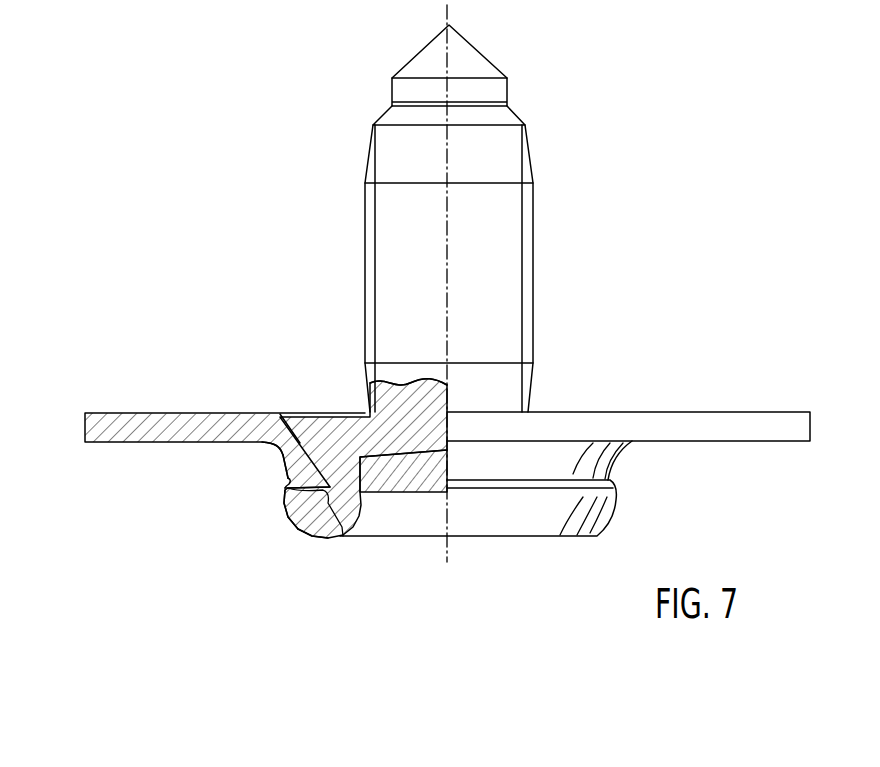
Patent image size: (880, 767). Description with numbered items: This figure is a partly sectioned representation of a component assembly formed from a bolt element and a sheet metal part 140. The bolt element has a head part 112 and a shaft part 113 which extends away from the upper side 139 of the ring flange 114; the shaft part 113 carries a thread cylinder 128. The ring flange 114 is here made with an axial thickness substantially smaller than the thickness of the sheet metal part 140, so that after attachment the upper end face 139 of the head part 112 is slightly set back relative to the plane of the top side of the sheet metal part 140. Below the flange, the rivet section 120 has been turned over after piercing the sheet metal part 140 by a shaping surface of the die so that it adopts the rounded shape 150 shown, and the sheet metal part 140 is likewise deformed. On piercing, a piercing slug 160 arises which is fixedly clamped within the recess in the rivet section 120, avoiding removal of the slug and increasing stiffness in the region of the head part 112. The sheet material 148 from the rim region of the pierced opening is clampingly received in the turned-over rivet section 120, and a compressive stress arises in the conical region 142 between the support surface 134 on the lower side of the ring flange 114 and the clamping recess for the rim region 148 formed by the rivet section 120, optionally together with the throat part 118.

The head part 112 is at (349, 417).
The shaft part 113 is at (532, 277).
The ring flange 114 is at (278, 413).
The throat region 118 is at (343, 537).
The rivet section 120 is at (288, 522).
The thread cylinder 128 is at (527, 227).
The lower side of the ring flange 134 is at (277, 466).
The upper side of the ring flange 139 is at (317, 415).
The sheet metal part 140 is at (134, 412).
The conical region 142 is at (285, 480).
The sheet material of the rim region 148 is at (283, 500).
The rounded shape 150 is at (303, 537).
The piercing slug 160 is at (417, 483).